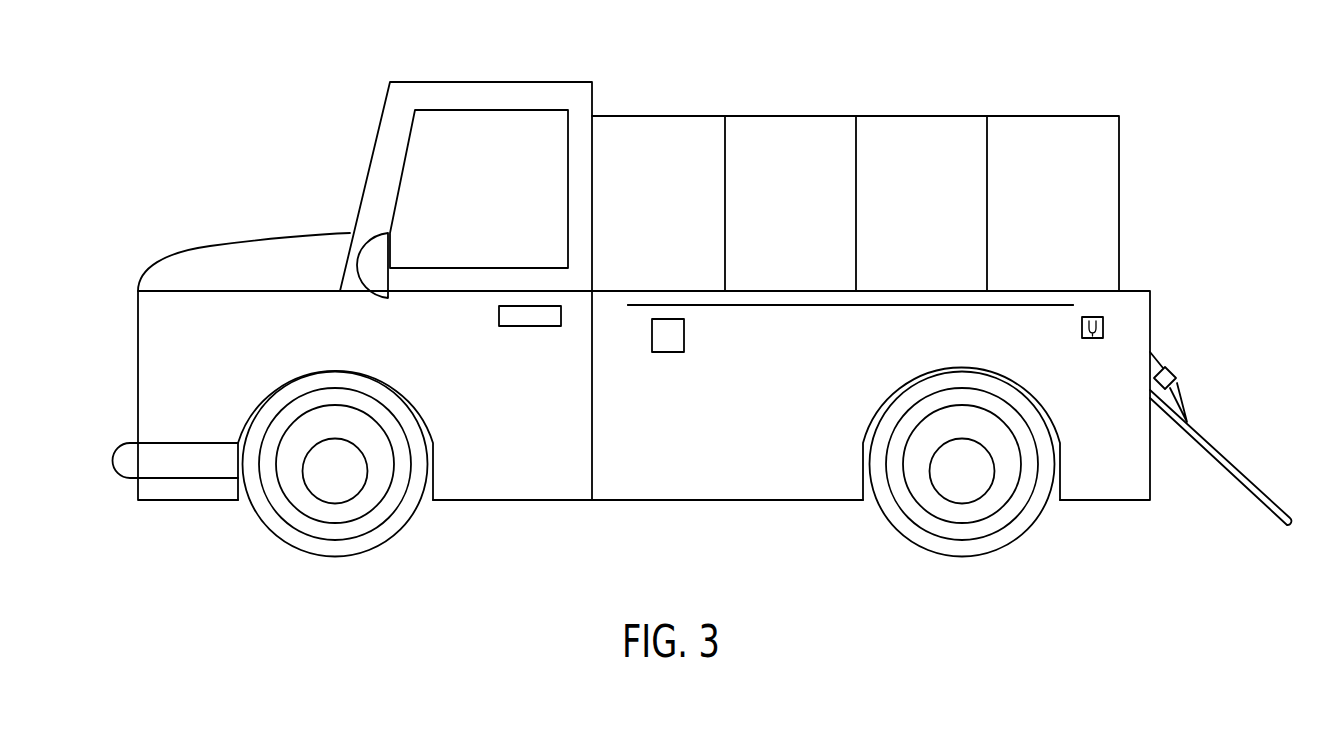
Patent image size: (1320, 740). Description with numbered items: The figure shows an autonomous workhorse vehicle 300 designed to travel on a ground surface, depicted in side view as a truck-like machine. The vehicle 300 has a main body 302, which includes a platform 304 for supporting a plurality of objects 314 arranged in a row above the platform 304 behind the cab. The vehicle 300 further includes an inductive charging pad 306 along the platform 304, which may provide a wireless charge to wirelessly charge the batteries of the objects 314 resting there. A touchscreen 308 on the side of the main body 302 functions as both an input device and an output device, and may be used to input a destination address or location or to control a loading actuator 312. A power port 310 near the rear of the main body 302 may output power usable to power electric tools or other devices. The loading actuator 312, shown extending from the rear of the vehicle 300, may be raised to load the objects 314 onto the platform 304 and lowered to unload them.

The vehicle 300 is at (288, 142).
The main body 302 is at (538, 500).
The platform 304 is at (778, 306).
The inductive charging pad 306 is at (826, 306).
The touchscreen 308 is at (671, 352).
The power port 310 is at (1093, 343).
The loading actuator 312 is at (1237, 465).
The objects 314 is at (1046, 116).